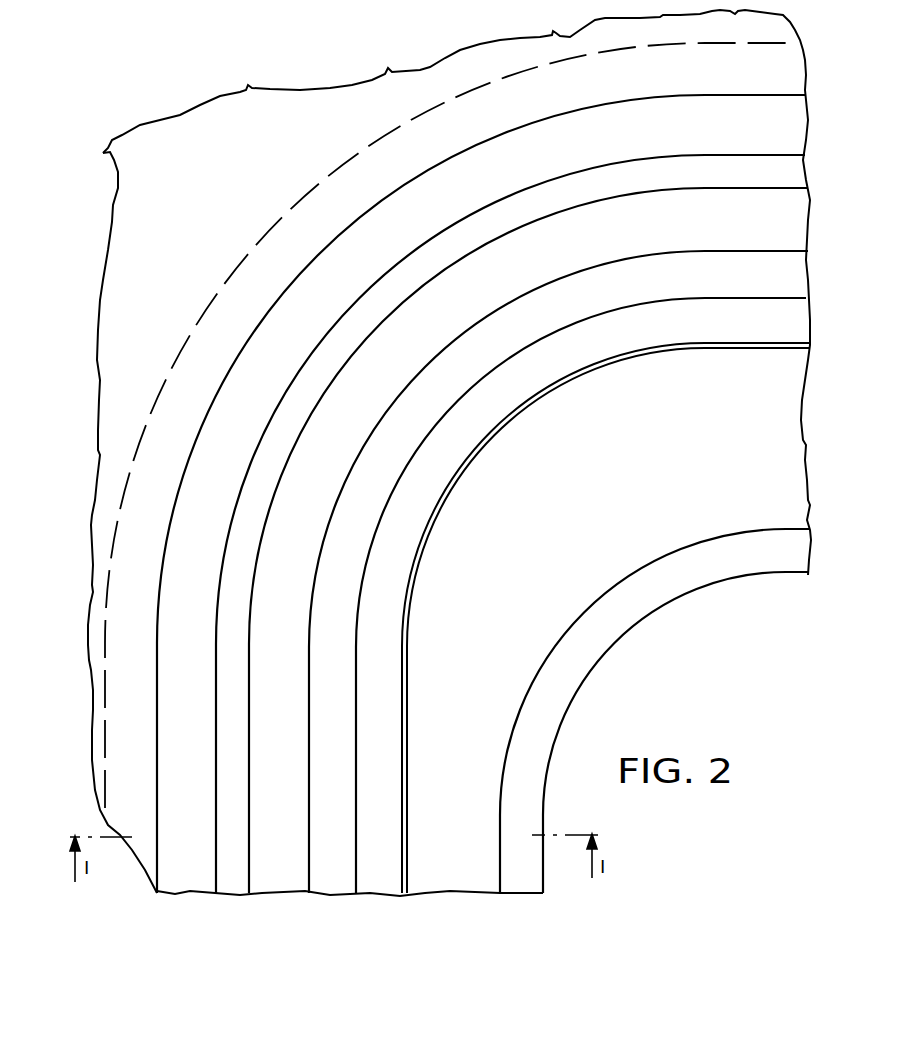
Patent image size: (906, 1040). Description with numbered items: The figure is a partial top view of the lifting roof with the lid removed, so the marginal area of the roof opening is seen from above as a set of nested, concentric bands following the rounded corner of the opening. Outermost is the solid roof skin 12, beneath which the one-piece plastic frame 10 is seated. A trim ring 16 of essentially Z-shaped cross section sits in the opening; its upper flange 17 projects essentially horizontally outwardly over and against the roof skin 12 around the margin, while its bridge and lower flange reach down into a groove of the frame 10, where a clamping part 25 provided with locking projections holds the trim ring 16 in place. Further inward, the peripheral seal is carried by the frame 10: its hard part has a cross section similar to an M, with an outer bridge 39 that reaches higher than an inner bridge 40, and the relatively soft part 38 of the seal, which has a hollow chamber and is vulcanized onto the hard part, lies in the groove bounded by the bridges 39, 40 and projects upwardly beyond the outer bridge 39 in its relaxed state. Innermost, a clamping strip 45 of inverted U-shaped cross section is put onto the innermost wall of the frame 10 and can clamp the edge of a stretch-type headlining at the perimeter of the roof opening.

The frame 10 is at (668, 525).
The roof skin 12 is at (136, 193).
The trim ring 16 is at (283, 336).
The upper flange 17 is at (232, 418).
The clamping part 25 is at (770, 173).
The soft part of the seal 38 is at (780, 275).
The outer bridge 39 is at (780, 218).
The inner bridge 40 is at (783, 323).
The clamping strip 45 is at (632, 600).